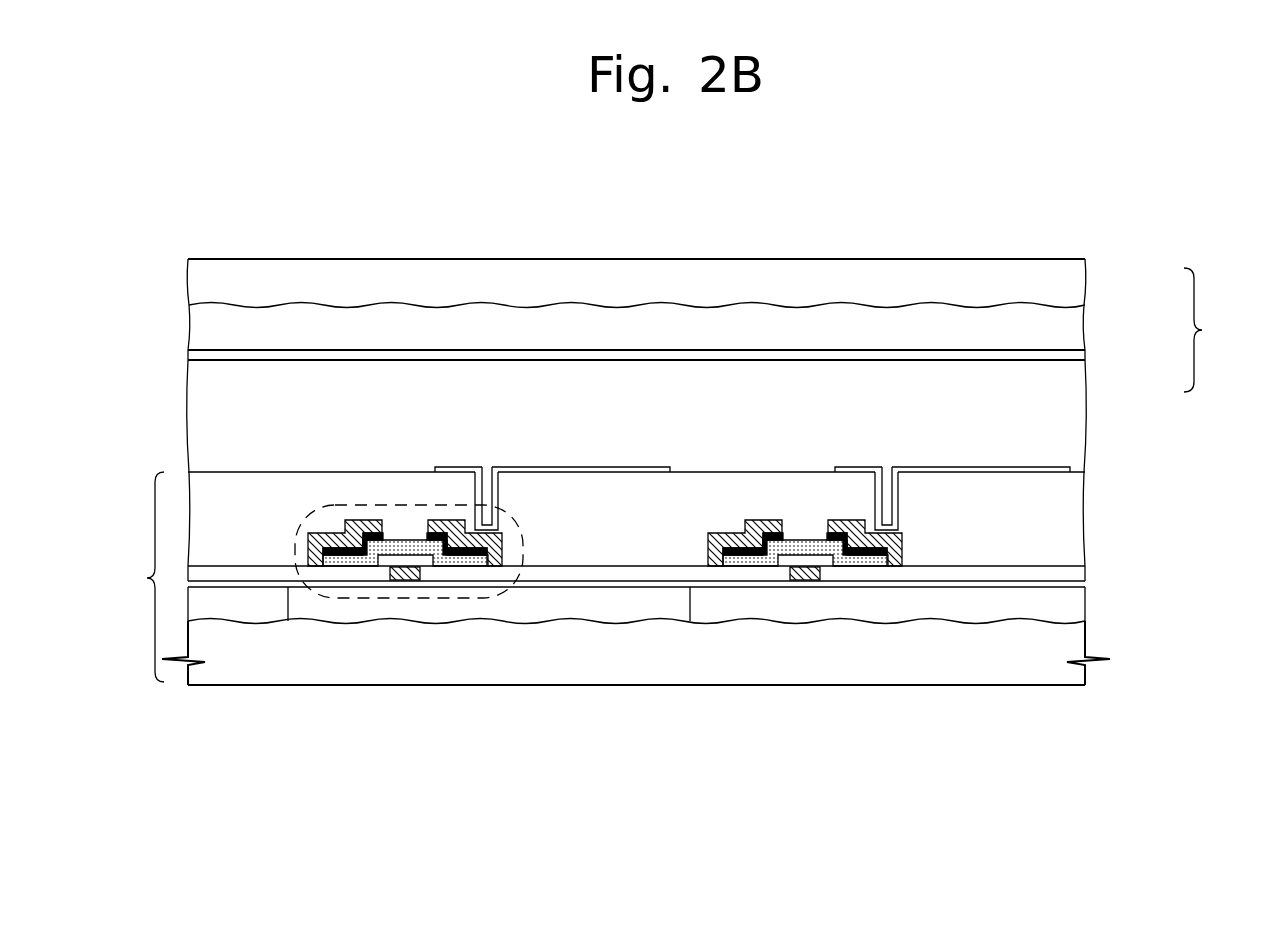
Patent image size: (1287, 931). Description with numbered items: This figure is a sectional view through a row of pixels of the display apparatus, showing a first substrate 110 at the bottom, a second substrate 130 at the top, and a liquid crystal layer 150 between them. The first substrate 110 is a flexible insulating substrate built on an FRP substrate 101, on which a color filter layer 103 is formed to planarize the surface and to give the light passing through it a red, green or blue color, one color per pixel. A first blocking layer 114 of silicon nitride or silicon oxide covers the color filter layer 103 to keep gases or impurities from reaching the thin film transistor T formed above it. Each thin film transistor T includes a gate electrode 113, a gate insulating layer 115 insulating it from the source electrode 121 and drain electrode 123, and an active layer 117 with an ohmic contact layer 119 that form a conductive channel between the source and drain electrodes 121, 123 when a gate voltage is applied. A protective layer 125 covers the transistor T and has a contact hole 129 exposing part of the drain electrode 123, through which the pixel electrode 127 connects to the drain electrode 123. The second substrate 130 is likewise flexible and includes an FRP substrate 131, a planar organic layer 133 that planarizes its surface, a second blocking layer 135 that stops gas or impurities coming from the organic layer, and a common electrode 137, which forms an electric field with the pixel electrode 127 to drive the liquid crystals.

The FRP substrate 101 is at (1076, 646).
The color filter layer 103 is at (1076, 613).
The first substrate 110 is at (132, 577).
The gate electrode 113 is at (401, 581).
The first blocking layer 114 is at (1078, 583).
The gate insulating layer 115 is at (1078, 576).
The active layer 117 is at (348, 562).
The ohmic contact layer 119 is at (367, 520).
The source electrode 121 is at (333, 530).
The drain electrode 123 is at (441, 520).
The protective layer 125 is at (1076, 521).
The pixel electrode 127 is at (569, 467).
The contact hole 129 is at (491, 470).
The second substrate 130 is at (1215, 330).
The FRP substrate 131 is at (1076, 285).
The planar organic layer 133 is at (1076, 332).
The second blocking layer 135 is at (1078, 353).
The common electrode 137 is at (1080, 362).
The liquid crystal layer 150 is at (1076, 415).
The thin film transistor T is at (470, 600).